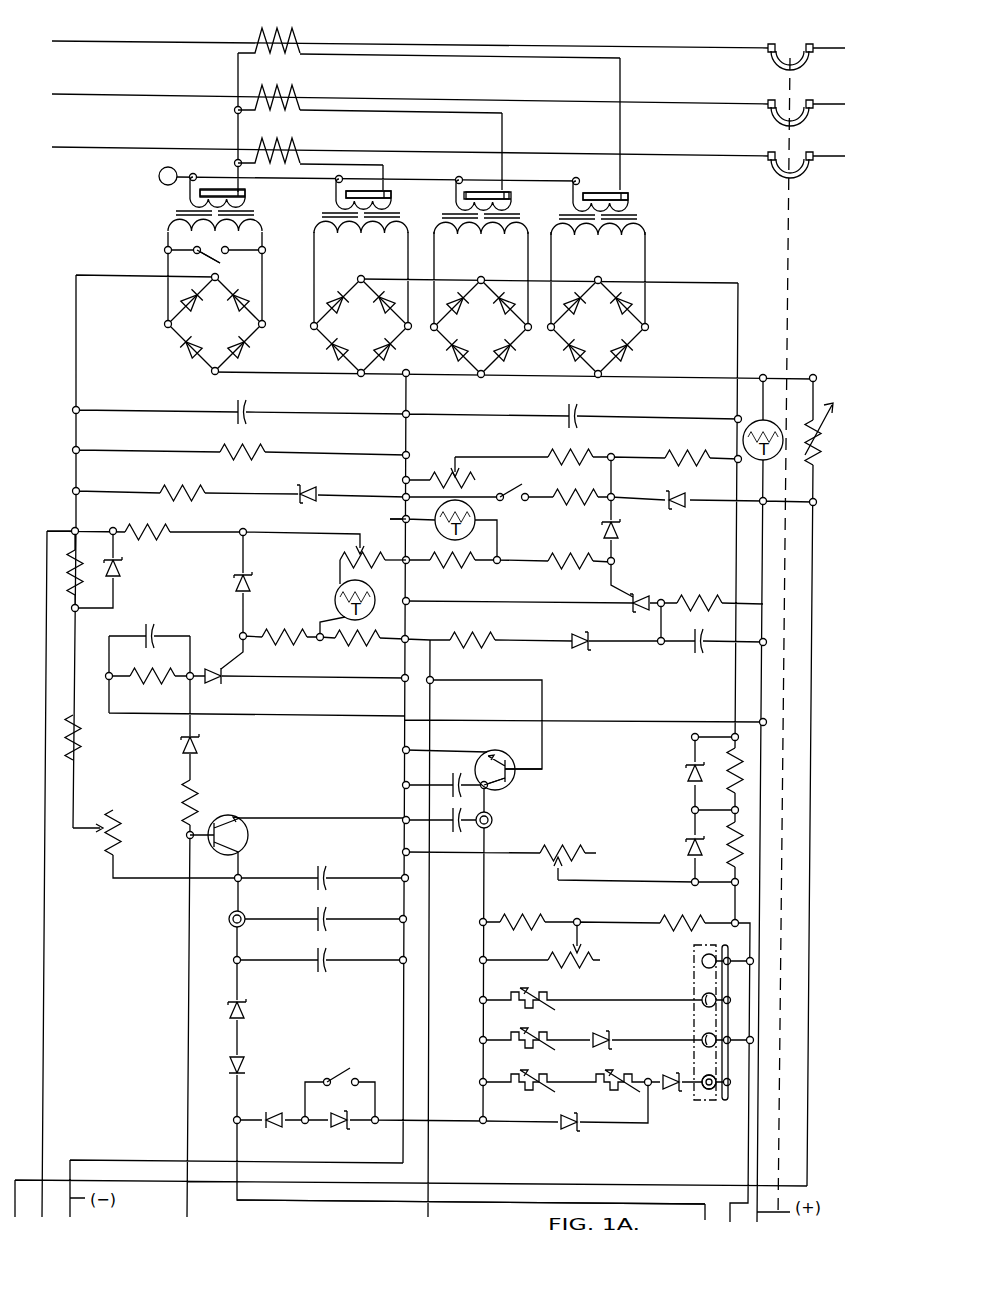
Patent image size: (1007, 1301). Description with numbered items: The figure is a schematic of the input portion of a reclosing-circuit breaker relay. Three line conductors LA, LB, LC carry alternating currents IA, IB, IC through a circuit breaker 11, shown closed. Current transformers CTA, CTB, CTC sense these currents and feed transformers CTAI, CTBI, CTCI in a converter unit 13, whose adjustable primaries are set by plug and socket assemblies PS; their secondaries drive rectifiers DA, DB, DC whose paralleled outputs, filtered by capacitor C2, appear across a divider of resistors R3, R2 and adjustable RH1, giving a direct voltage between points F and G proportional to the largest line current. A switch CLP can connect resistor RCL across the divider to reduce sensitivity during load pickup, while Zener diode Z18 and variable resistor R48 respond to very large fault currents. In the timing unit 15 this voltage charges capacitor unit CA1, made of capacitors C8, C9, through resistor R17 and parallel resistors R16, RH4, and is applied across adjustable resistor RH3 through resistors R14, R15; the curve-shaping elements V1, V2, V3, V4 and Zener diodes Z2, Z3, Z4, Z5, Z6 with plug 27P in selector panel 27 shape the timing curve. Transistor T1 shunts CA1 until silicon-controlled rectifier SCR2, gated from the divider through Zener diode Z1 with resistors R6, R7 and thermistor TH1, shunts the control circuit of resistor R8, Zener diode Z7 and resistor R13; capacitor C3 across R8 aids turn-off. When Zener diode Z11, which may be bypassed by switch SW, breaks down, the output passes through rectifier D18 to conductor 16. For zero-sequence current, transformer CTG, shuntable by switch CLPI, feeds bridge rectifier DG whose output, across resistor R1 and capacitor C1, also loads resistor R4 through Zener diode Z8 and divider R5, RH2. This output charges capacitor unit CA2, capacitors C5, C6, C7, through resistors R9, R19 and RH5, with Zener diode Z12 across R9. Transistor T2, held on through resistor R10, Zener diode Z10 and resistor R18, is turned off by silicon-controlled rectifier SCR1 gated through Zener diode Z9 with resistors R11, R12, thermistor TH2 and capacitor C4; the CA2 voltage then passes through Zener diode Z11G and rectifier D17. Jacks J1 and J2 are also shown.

The line conductor LA is at (90, 39).
The line conductor LB is at (90, 92).
The line conductor LC is at (90, 146).
The current transformer CTA is at (275, 39).
The current transformer CTB is at (283, 95).
The current transformer CTC is at (281, 149).
The alternating current IA is at (535, 27).
The alternating current IB is at (535, 82).
The alternating current IC is at (560, 134).
The plug and socket assembly PS is at (247, 194).
The transformer CTG is at (183, 208).
The transformer CTCI is at (330, 211).
The transformer CTBI is at (512, 216).
The transformer CTAI is at (628, 216).
The switch CLPI is at (214, 253).
The circuit breaker 11 is at (785, 190).
The full-wave rectifier DG is at (228, 334).
The rectifier DC is at (374, 336).
The rectifier DB is at (493, 337).
The rectifier DA is at (610, 337).
The converter unit 13 is at (705, 350).
The capacitor C1 is at (238, 406).
The filter capacitor C2 is at (569, 409).
The resistor R1 is at (257, 454).
The adjustable resistor RH1 is at (445, 477).
The resistor R2 is at (555, 455).
The resistor R3 is at (674, 457).
The point F is at (739, 464).
The variable resistor R48 is at (815, 458).
The resistor R4 is at (181, 489).
The Zener diode Z8 is at (312, 490).
The resistor RCL is at (574, 492).
The switch unit CLP is at (521, 497).
The Zener diode Z18 is at (681, 512).
The resistor R5 is at (163, 529).
The resistor R9 is at (81, 559).
The Zener diode Z12 is at (127, 569).
The point G is at (391, 519).
The thermistor TH1 is at (471, 509).
The Zener diode Z1 is at (618, 525).
The adjustable resistor RH2 is at (344, 553).
The thermistor TH2 is at (338, 593).
The resistor R6 is at (456, 567).
The resistor R7 is at (560, 567).
The silicon-controlled rectifier SCR2 is at (645, 590).
The resistor R8 is at (688, 600).
The Zener diode Z9 is at (234, 589).
The resistor R11 is at (291, 630).
The resistor R12 is at (355, 645).
The resistor R13 is at (470, 636).
The Zener diode Z7 is at (576, 632).
The capacitor C3 is at (695, 653).
The timing unit 15 is at (655, 710).
The capacitor C4 is at (151, 626).
The resistor R10 is at (160, 684).
The silicon-controlled rectifier SCR1 is at (216, 686).
The capacitor unit CA1 is at (474, 744).
The transistor T1 is at (492, 754).
The resistor R14 is at (732, 764).
The Zener diode Z2 is at (685, 772).
The capacitor C8 is at (457, 770).
The resistor R19 is at (82, 748).
The Zener diode Z10 is at (202, 752).
The resistor R18 is at (200, 790).
The jack J1 is at (494, 820).
The capacitor C9 is at (456, 828).
The adjustable resistor RH5 is at (118, 820).
The transistor T2 is at (250, 833).
The adjustable resistor RH3 is at (560, 848).
The Zener diode Z3 is at (685, 850).
The resistor R15 is at (734, 840).
The capacitor C5 is at (325, 870).
The jack J2 is at (229, 917).
The capacitor C6 is at (326, 912).
The capacitor unit CA2 is at (395, 916).
The capacitor C7 is at (327, 955).
The resistor R16 is at (520, 914).
The resistor R17 is at (678, 917).
The curve selector switch panel 27 is at (692, 947).
The curve-shaping element V1 is at (530, 997).
The adjustable resistor RH4 is at (595, 965).
The curve-shaping element V2 is at (549, 1035).
The Zener diode Z4 is at (600, 1037).
The Zener diode Z5 is at (670, 1070).
The Zener diode Z11G is at (247, 1022).
The rectifier D17 is at (247, 1065).
The manually-operated switch SW is at (341, 1071).
The curve-shaping element V4 is at (533, 1090).
The curve-shaping element V3 is at (608, 1090).
The plug 27P is at (705, 1094).
The rectifier D18 is at (283, 1128).
The Zener diode Z11 is at (337, 1129).
The Zener diode Z6 is at (567, 1132).
The conductor 16 is at (705, 1214).